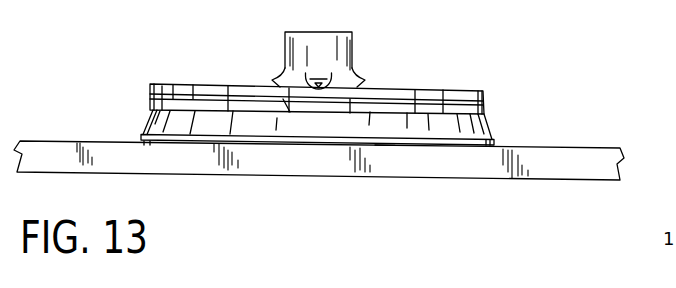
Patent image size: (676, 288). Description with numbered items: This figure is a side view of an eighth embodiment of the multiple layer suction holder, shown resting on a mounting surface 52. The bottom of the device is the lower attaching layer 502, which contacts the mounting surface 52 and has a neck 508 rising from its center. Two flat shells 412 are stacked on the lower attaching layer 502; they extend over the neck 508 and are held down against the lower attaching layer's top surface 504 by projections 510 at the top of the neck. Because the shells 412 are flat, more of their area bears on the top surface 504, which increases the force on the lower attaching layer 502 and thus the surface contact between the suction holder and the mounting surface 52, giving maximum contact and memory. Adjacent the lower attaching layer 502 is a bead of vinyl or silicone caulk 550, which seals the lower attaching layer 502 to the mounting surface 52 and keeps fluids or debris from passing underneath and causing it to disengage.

The mounting surface 52 is at (565, 148).
The lower attaching layer 502 is at (492, 126).
The top surface 504 is at (392, 113).
The shells 412 is at (476, 92).
The neck 508 is at (283, 99).
The projections 510 is at (357, 77).
The caulk 550 is at (383, 144).